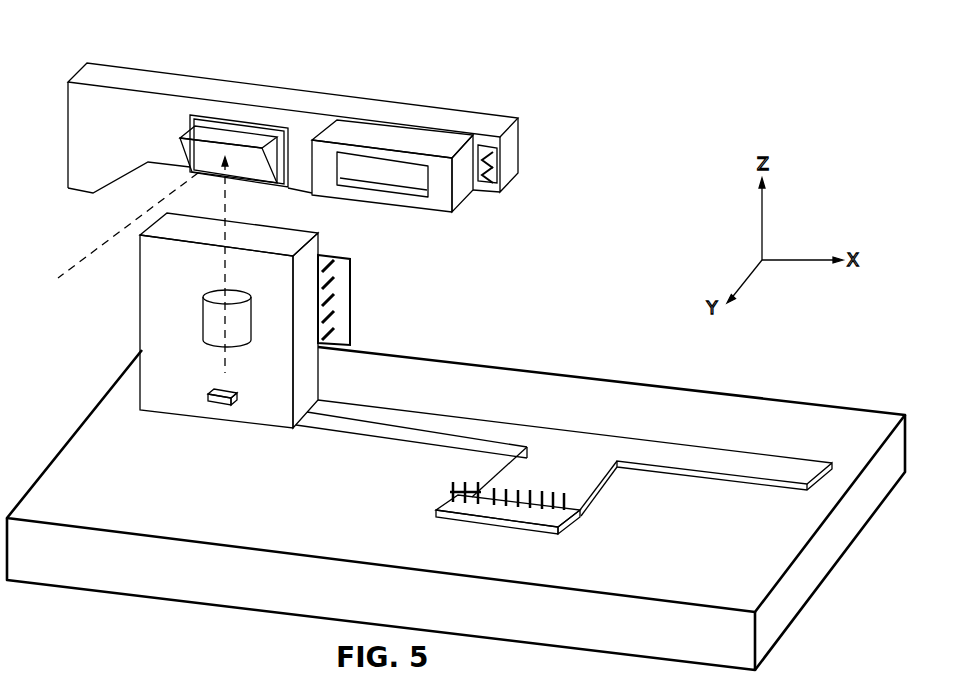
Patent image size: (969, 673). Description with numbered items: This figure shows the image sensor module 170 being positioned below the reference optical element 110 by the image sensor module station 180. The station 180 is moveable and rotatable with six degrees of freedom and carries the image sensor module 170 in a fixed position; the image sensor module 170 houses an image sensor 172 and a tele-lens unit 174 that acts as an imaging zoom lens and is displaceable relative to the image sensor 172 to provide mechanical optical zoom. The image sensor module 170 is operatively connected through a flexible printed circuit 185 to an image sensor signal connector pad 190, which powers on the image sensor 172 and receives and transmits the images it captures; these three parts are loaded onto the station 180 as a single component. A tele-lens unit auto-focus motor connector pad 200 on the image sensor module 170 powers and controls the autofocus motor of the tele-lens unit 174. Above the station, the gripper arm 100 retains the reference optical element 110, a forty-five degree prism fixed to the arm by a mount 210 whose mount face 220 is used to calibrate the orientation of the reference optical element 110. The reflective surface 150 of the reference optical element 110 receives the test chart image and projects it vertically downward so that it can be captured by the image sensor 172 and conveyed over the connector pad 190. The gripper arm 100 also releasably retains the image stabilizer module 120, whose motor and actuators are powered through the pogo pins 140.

The gripper arm 100 is at (457, 108).
The reference optical element 110 is at (235, 125).
The image stabilizer module 120 is at (446, 146).
The pogo pins 140 is at (500, 168).
The reflective surface 150 is at (208, 158).
The image sensor module 170 is at (213, 422).
The image sensor 172 is at (208, 396).
The tele-lens unit 174 is at (212, 318).
The image sensor module station 180 is at (740, 417).
The flexible printed circuit 185 is at (553, 445).
The image sensor signal connector pad 190 is at (475, 505).
The tele-lens unit auto-focus motor connector pad 200 is at (334, 283).
The mount 210 is at (288, 128).
The mount face 220 is at (277, 186).